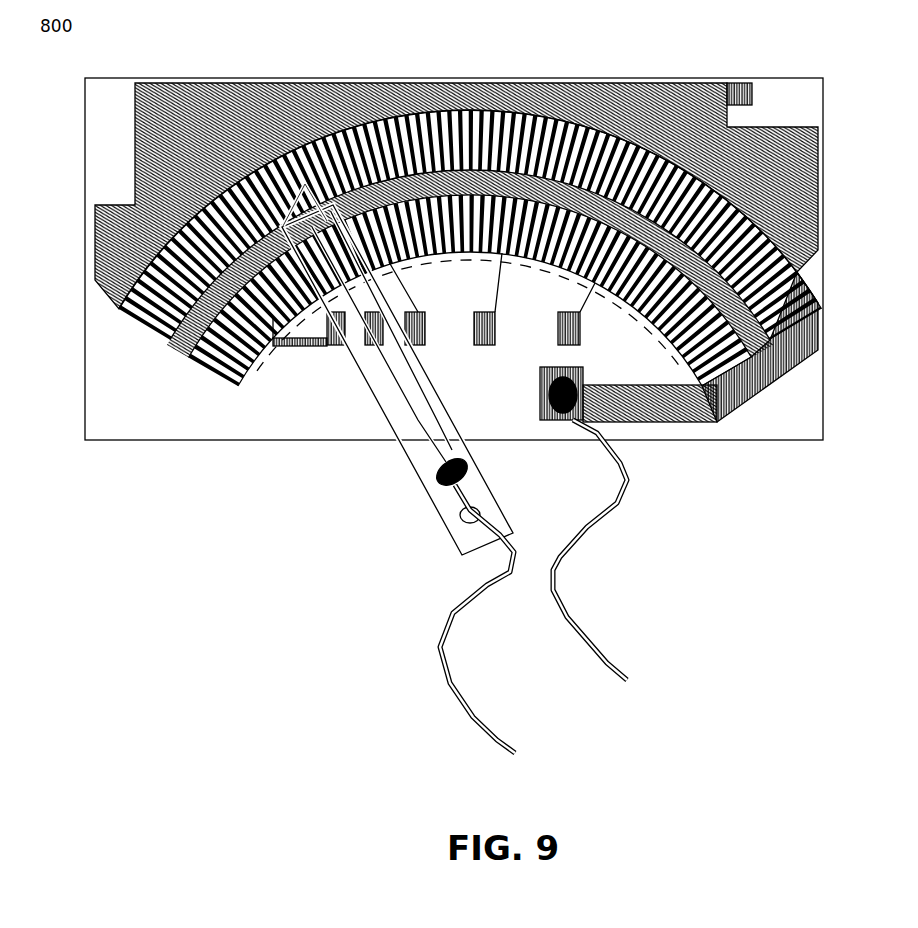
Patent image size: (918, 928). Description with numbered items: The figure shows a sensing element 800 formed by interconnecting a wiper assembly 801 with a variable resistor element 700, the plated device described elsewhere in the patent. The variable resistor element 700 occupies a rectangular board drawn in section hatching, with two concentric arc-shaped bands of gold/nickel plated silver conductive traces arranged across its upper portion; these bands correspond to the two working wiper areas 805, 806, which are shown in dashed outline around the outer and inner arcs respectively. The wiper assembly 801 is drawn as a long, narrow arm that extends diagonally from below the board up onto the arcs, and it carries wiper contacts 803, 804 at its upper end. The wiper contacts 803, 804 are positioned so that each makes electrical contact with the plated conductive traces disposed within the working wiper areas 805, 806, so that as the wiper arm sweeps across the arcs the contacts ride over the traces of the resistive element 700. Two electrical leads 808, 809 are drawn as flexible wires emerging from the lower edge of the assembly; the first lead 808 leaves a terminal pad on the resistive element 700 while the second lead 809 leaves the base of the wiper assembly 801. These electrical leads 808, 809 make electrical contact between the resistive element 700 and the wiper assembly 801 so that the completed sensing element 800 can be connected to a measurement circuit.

The probe card assembly 800 is at (456, 252).
The variable resistor element 700 is at (454, 259).
The wiper assembly 801 is at (395, 407).
The wiper contact 803 is at (216, 382).
The wiper contact 804 is at (318, 297).
The working wiper area 805 is at (135, 325).
The working wiper area 806 is at (211, 377).
The electrical lead 808 is at (623, 500).
The electrical lead 809 is at (515, 563).